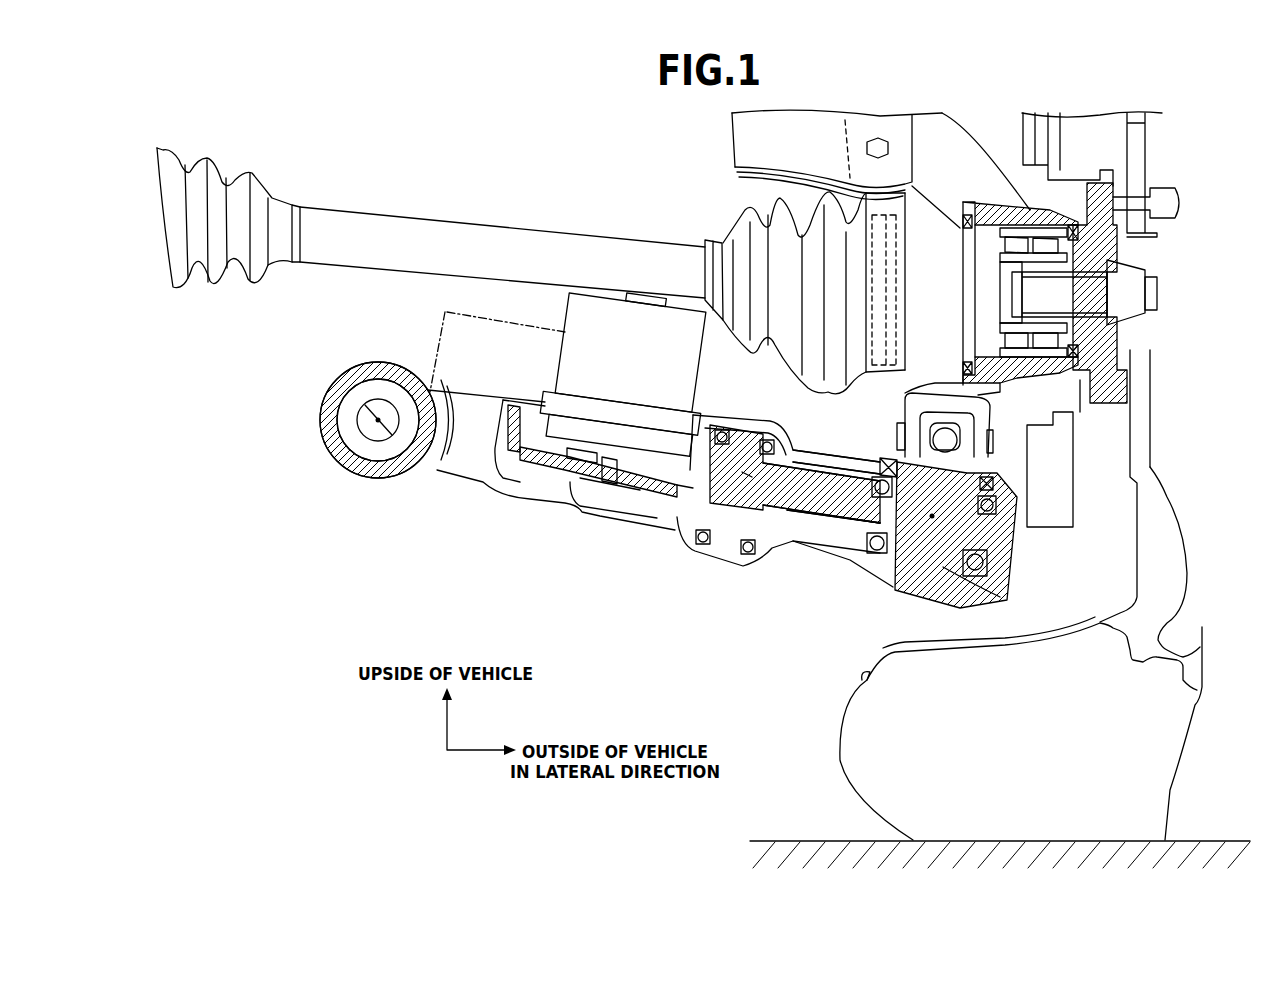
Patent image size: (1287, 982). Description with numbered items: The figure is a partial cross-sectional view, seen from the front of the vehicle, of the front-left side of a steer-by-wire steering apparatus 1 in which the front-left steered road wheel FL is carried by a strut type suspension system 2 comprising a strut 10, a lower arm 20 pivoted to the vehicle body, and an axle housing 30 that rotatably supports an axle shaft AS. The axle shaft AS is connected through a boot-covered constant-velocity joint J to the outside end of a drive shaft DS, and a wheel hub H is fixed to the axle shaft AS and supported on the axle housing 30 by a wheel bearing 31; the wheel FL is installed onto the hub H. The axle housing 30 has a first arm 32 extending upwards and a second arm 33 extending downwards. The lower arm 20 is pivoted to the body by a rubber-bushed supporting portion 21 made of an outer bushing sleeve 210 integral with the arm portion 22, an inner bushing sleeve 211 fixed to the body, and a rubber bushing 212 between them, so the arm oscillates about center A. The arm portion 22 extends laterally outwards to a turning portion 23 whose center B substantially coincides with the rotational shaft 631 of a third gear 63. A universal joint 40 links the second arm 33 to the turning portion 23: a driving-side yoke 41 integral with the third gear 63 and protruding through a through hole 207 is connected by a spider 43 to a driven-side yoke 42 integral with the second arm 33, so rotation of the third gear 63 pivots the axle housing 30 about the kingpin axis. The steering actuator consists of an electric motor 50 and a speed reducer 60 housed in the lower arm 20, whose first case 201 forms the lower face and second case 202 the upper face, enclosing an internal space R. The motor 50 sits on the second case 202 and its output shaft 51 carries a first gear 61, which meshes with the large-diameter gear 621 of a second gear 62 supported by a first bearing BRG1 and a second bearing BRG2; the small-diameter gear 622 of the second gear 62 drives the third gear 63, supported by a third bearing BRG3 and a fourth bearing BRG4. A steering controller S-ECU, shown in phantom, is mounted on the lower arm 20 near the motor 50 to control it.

The steering apparatus 1 is at (670, 494).
The suspension system 2 is at (1086, 347).
The strut 10 is at (722, 137).
The lower arm 20 is at (670, 494).
The supporting portion 21 is at (353, 432).
The arm portion 22 is at (460, 390).
The turning portion 23 is at (952, 554).
The axle housing 30 is at (1110, 293).
The wheel bearing 31 is at (1063, 343).
The first arm 32 is at (975, 170).
The second arm 33 is at (1000, 390).
The universal joint 40 is at (1086, 452).
The driving-side yoke 41 is at (950, 457).
The driven-side yoke 42 is at (983, 417).
The spider 43 is at (980, 442).
The electric motor 50 is at (562, 305).
The output shaft 51 is at (580, 460).
The speed reducer 60 is at (694, 553).
The first gear 61 is at (620, 497).
The second gear 62 is at (662, 532).
The third gear 63 is at (777, 522).
The first case 201 is at (597, 517).
The second case 202 is at (813, 467).
The through hole 207 is at (888, 456).
The outer bushing sleeve 210 is at (373, 362).
The inner bushing sleeve 211 is at (373, 428).
The rubber bushing 212 is at (368, 448).
The large-diameter gear 621 is at (813, 535).
The small-diameter gear 622 is at (768, 462).
The rotational shaft 631 is at (947, 567).
The center of oscillating motion A is at (360, 410).
The center of the outside end portion B is at (934, 516).
The internal space R is at (742, 472).
The wheel hub H is at (1108, 330).
The axle shaft AS is at (1087, 290).
The constant-velocity joint J is at (845, 200).
The drive shaft DS is at (465, 223).
The front-left steered road wheel FL is at (1202, 570).
The steering controller S-ECU is at (437, 330).
The first bearing BRG1 is at (695, 548).
The second bearing BRG2 is at (772, 440).
The third bearing BRG3 is at (979, 562).
The fourth bearing BRG4 is at (875, 476).